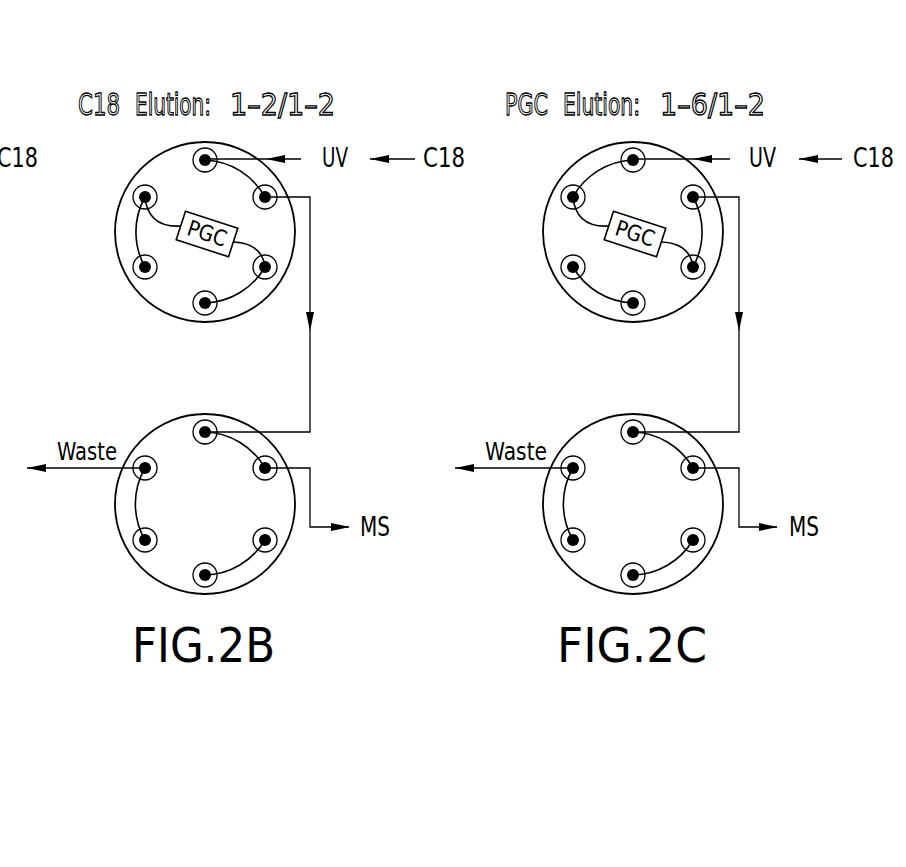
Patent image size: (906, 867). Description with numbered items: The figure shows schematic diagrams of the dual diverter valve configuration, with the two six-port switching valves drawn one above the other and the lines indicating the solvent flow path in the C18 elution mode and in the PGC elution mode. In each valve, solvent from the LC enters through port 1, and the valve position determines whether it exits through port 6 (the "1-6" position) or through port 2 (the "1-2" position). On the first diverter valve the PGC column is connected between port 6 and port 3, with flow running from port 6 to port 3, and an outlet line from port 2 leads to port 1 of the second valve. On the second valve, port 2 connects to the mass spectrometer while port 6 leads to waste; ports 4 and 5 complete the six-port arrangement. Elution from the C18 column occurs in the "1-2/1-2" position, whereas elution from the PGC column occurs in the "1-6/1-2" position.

In FIG. 2B, the port 1 is at (205, 311).
In FIG. 2C, the port 1 is at (633, 311).
In FIG. 2B, the port 2 is at (257, 339).
In FIG. 2C, the port 2 is at (685, 339).
In FIG. 2B, the port 3 is at (257, 398).
In FIG. 2C, the port 3 is at (685, 398).
In FIG. 2B, the port 4 is at (205, 424).
In FIG. 2C, the port 4 is at (633, 424).
In FIG. 2B, the port 5 is at (153, 398).
In FIG. 2C, the port 5 is at (581, 398).
In FIG. 2B, the port 6 is at (153, 339).
In FIG. 2C, the port 6 is at (581, 339).